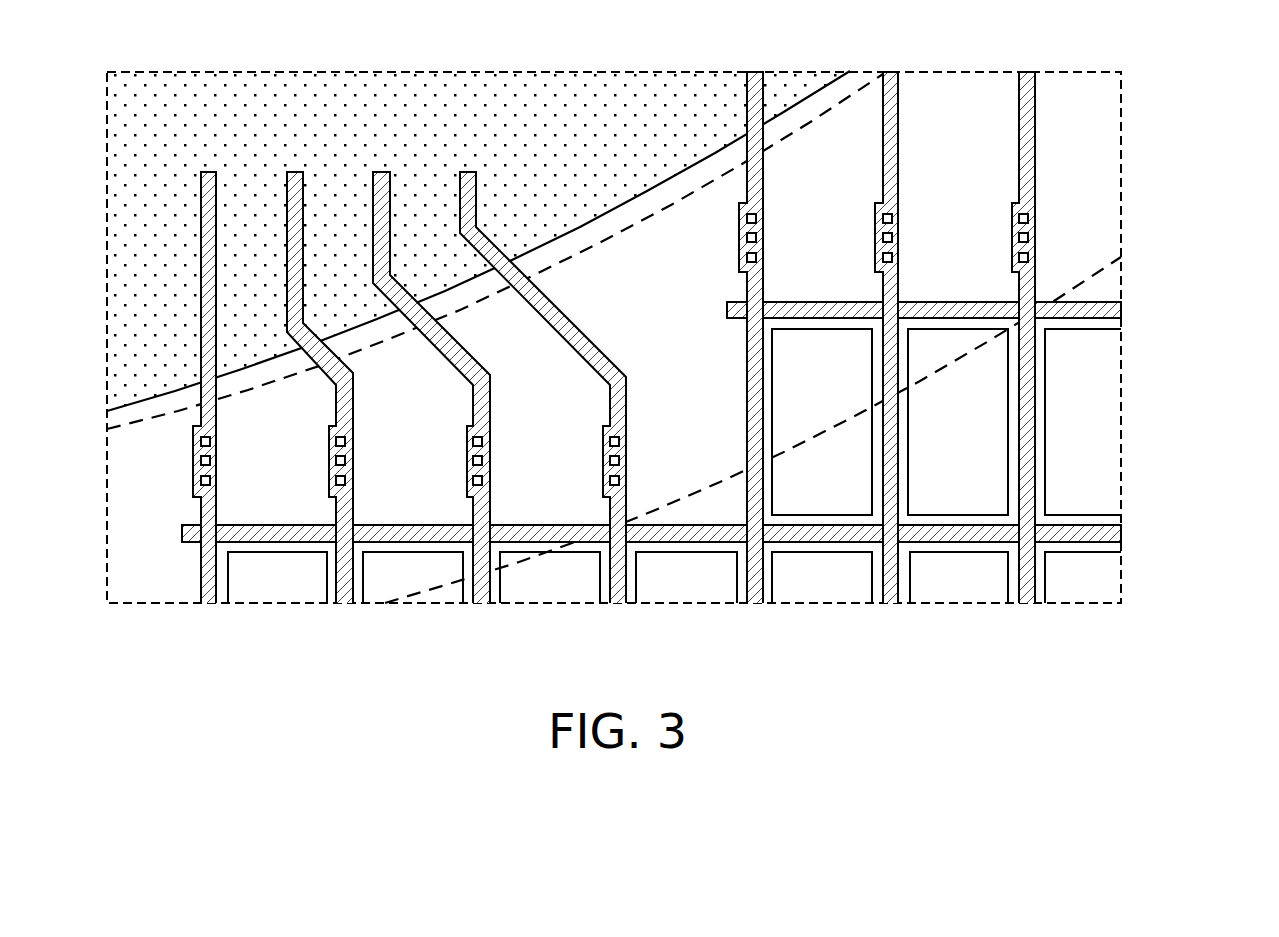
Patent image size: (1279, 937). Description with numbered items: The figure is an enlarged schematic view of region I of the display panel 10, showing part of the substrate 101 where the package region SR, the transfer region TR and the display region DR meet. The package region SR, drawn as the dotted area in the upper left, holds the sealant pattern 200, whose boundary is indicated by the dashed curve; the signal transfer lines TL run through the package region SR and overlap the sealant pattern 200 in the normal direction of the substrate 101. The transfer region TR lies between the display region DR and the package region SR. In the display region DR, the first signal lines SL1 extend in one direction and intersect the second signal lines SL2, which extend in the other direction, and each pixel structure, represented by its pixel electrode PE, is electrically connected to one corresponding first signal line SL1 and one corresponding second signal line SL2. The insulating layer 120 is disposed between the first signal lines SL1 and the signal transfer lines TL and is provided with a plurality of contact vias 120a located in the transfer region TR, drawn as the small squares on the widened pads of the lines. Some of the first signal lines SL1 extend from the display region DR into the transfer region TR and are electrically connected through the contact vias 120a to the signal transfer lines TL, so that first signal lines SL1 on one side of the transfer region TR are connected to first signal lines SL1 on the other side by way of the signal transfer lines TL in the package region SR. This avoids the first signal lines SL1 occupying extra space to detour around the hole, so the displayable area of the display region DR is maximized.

The display panel 10 is at (686, 347).
The substrate 101 is at (1100, 101).
The package region SR is at (797, 113).
The sealant pattern 200 is at (835, 80).
The region I is at (1077, 72).
The signal transfer line TL is at (1027, 118).
The transfer region TR is at (1090, 148).
The display region DR is at (1043, 462).
The contact via 120a is at (1030, 258).
The insulating layer 120 is at (733, 341).
The first signal line SL1 is at (729, 334).
The second signal line SL2 is at (1105, 311).
The pixel electrode PE is at (1090, 327).